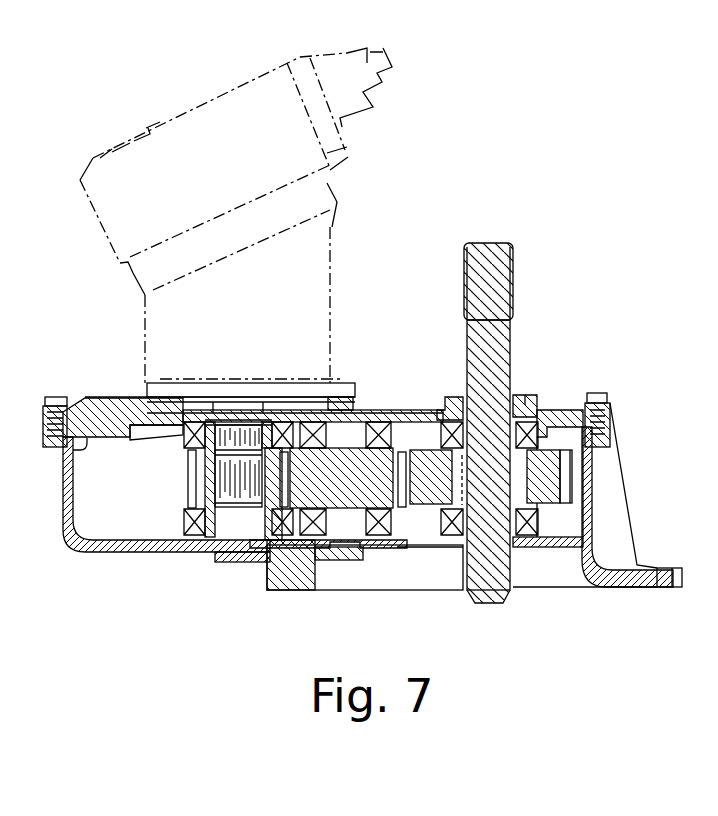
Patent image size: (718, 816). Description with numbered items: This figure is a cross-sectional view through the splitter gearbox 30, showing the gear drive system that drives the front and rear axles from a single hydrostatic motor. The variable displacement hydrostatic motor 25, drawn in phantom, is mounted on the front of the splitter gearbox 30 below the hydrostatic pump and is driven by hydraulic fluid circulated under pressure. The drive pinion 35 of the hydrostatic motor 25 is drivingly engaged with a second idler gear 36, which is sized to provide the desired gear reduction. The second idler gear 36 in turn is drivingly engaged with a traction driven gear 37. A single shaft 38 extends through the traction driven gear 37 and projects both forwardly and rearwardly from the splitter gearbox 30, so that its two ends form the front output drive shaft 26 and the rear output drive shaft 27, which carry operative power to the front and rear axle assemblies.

The variable displacement hydrostatic motor 25 is at (338, 127).
The front output drive shaft 26 is at (512, 248).
The rear output drive shaft 27 is at (514, 596).
The splitter gearbox 30 is at (152, 557).
The drive pinion 35 is at (187, 493).
The second idler gear 36 is at (398, 545).
The traction driven gear 37 is at (567, 478).
The single shaft 38 is at (510, 350).